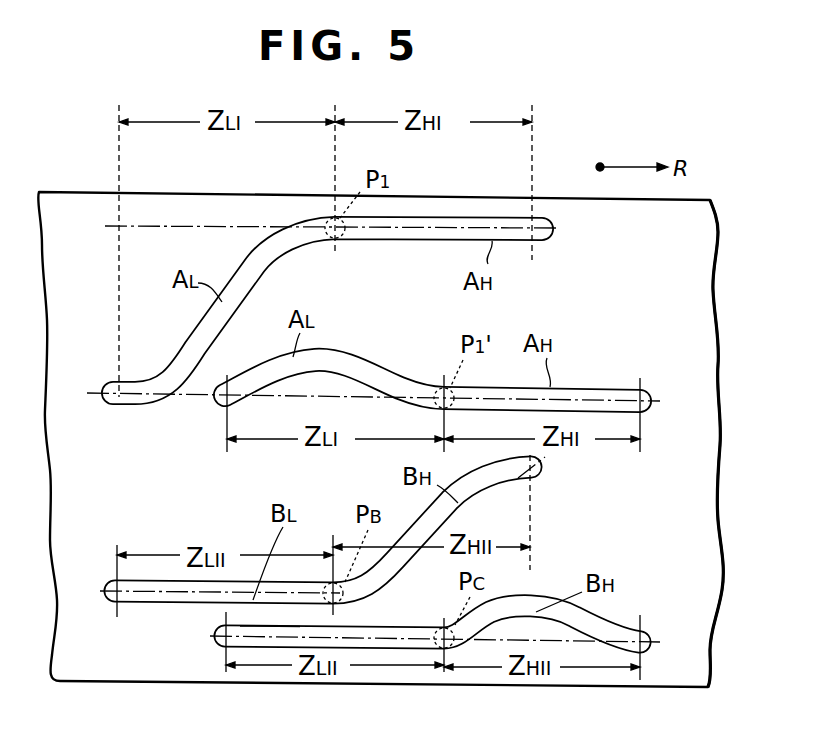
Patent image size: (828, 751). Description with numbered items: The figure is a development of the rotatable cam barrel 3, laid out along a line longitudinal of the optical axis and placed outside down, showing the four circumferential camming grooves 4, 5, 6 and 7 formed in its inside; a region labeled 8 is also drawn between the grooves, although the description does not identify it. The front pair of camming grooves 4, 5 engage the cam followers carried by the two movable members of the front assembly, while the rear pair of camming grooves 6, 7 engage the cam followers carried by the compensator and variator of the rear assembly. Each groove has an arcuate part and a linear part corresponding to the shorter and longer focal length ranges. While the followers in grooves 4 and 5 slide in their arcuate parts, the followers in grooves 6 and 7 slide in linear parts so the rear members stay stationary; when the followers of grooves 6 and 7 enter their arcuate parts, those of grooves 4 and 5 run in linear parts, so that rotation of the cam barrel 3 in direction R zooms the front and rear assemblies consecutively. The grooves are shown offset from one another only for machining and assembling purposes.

The rotatable cam barrel 3 is at (680, 676).
The camming groove 4 is at (113, 406).
The camming groove 5 is at (218, 406).
The camming groove 6 is at (140, 604).
The camming groove 7 is at (215, 641).
The land between cam slots 8 is at (253, 624).